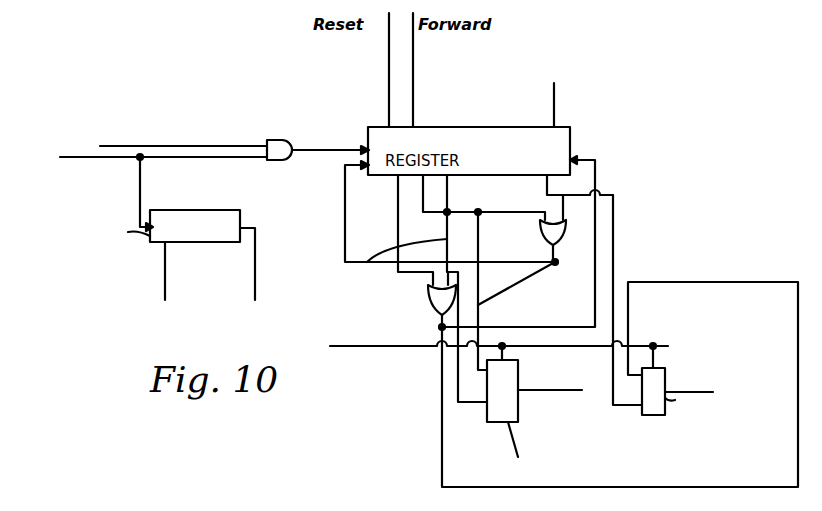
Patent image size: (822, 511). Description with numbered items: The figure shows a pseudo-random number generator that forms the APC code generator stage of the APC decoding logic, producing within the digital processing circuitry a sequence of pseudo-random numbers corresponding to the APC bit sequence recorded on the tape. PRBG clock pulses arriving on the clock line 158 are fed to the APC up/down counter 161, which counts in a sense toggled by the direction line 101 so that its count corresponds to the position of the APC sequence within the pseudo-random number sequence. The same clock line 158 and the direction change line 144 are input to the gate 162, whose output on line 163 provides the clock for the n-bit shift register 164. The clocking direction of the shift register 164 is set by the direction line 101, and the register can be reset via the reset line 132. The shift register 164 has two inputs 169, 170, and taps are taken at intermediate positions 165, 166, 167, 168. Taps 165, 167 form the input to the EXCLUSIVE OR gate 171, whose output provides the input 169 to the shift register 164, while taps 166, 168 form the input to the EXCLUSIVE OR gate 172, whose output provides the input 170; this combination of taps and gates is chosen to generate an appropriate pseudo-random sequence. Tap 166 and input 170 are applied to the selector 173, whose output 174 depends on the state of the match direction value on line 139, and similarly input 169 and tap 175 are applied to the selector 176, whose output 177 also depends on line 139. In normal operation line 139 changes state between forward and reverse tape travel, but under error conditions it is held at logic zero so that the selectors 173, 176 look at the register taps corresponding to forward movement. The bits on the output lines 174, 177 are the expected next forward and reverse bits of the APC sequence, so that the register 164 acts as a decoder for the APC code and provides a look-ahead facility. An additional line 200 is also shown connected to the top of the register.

The direction line 101 is at (413, 90).
The reset line 132 is at (389, 97).
The match direction line 139 is at (385, 347).
The direction change line 144 is at (165, 146).
The PRBG clock line 158 is at (108, 157).
The APC up/down counter 161 is at (218, 200).
The gate 162 is at (278, 140).
The gate output line 163 is at (330, 132).
The n-bit shift register 164 is at (483, 104).
The tap 165 is at (398, 231).
The tap 166 is at (546, 212).
The tap 167 is at (366, 266).
The tap 168 is at (613, 208).
The shift register input 169 is at (597, 170).
The shift register input 170 is at (345, 197).
The EXCLUSIVE OR gate 171 is at (428, 300).
The EXCLUSIVE OR gate 172 is at (542, 232).
The selector 173 is at (495, 422).
The selector output line 174 is at (540, 393).
The tap 175 is at (620, 243).
The selector 176 is at (655, 415).
The selector output line 177 is at (700, 372).
The input line 200 is at (556, 100).